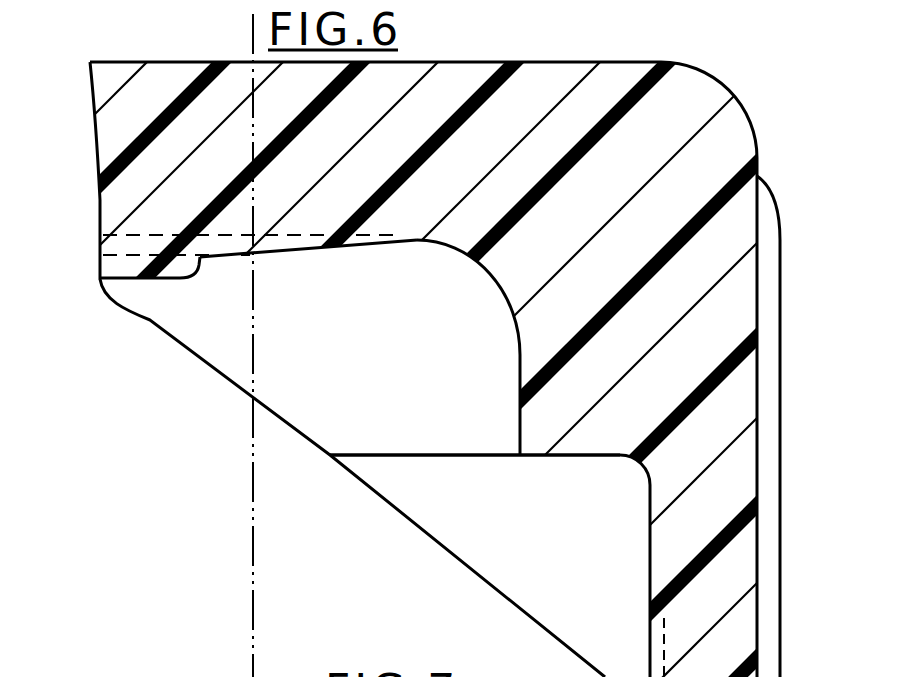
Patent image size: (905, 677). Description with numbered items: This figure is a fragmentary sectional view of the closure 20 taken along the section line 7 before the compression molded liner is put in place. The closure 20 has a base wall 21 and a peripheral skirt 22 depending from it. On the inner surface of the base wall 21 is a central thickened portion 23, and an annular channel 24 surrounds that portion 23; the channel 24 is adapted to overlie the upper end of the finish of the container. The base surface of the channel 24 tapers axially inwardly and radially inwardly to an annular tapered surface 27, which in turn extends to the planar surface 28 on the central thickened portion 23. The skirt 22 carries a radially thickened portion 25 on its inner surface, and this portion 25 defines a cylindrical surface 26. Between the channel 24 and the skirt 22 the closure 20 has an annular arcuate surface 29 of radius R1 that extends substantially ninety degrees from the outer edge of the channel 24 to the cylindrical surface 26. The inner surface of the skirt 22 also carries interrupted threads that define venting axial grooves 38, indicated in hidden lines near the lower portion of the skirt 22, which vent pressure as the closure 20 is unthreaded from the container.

The section line 7- 7 is at (246, 34).
The closure 20 is at (736, 88).
The base wall 21 is at (553, 78).
The peripheral skirt 22 is at (665, 557).
The central thickened portion 23 is at (112, 200).
The annular channel 24 is at (322, 245).
The radially thickened portion 25 is at (592, 432).
The cylindrical surface 26 is at (520, 392).
The annular tapered surface 27 is at (200, 275).
The planar surface 28 is at (118, 296).
The annular arcuate surface 29 is at (495, 283).
The venting axial grooves 38 is at (652, 640).